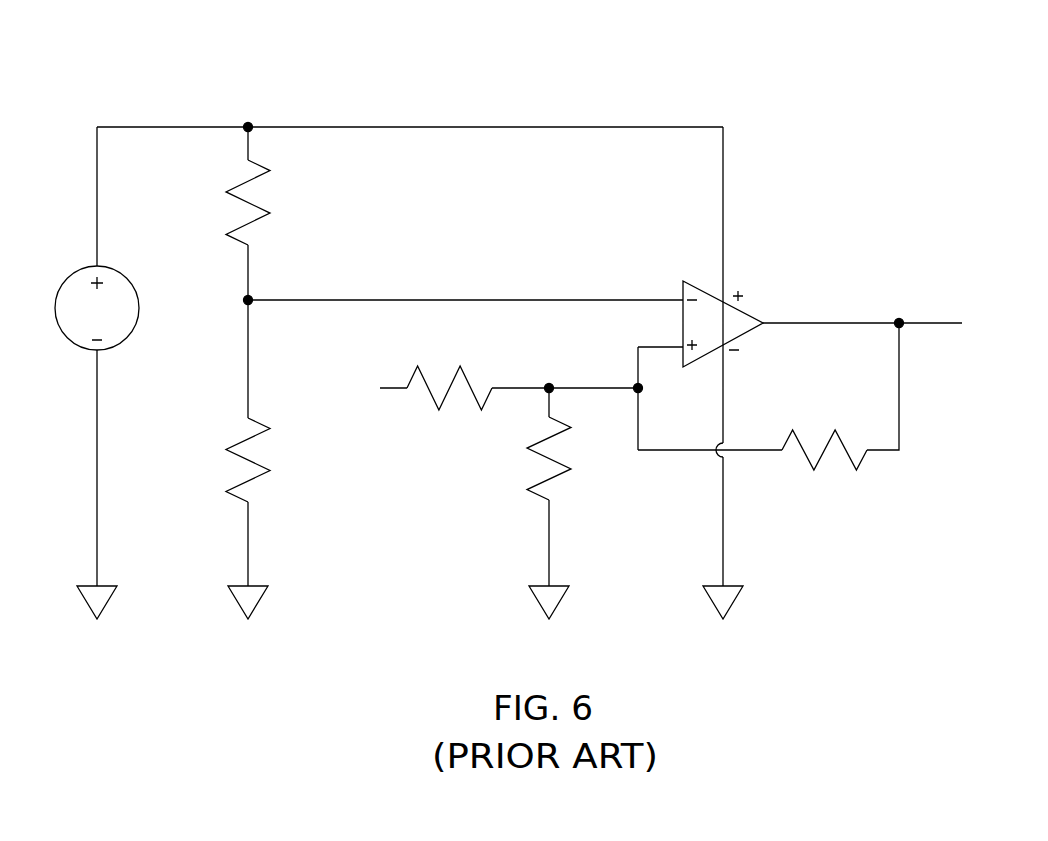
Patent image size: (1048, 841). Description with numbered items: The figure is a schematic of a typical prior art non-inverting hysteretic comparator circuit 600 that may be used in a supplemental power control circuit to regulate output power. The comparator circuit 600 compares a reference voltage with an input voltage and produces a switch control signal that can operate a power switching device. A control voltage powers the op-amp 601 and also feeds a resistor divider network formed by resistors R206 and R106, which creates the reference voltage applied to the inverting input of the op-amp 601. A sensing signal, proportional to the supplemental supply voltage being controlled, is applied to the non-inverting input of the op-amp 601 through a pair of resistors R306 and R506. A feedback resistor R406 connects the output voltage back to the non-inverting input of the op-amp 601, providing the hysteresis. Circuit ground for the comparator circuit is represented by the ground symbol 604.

The non-inverting hysteretic comparator circuit 600 is at (537, 329).
The op-amp 601 is at (750, 312).
The ground symbol 604 is at (731, 585).
The resistor R106 is at (278, 460).
The resistor R206 is at (281, 202).
The resistor R306 is at (449, 372).
The feedback resistor R406 is at (843, 462).
The resistor R506 is at (581, 458).